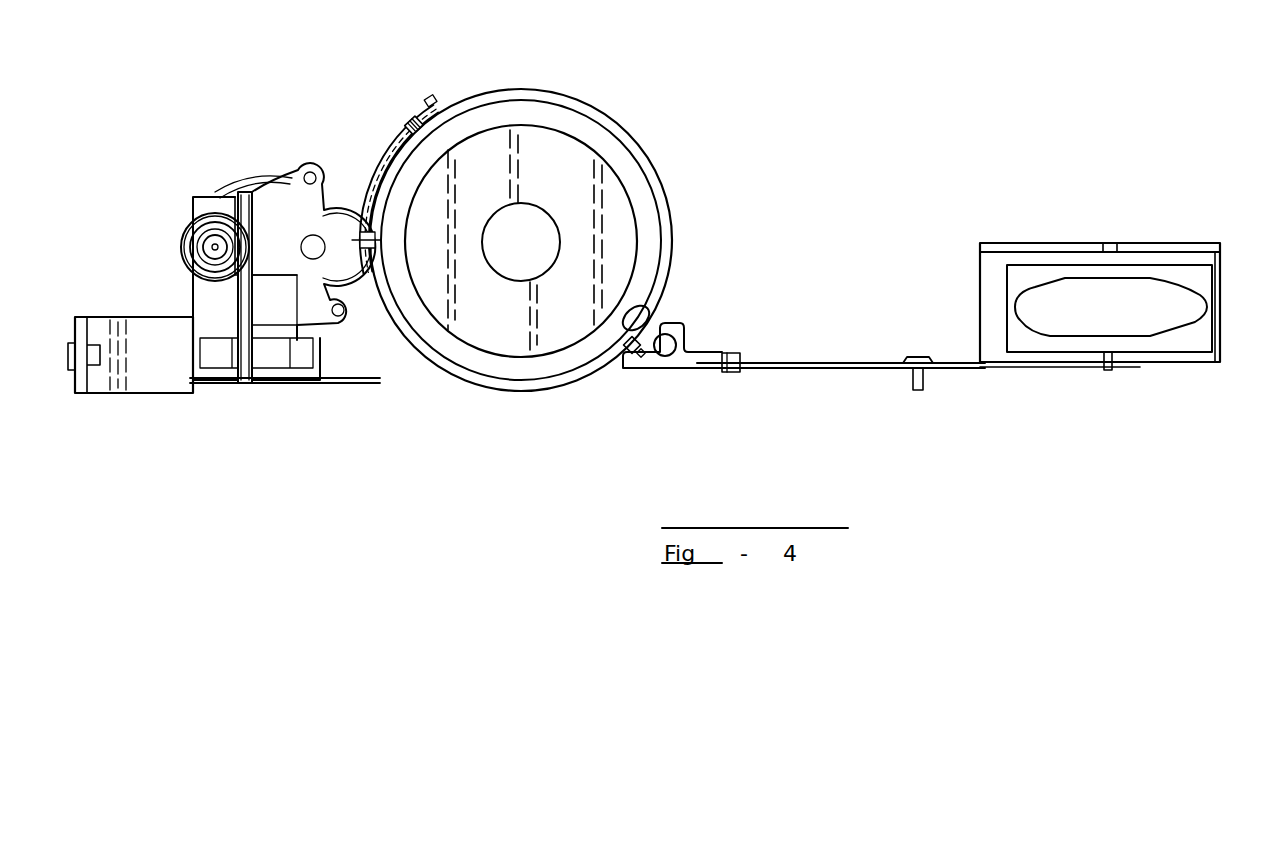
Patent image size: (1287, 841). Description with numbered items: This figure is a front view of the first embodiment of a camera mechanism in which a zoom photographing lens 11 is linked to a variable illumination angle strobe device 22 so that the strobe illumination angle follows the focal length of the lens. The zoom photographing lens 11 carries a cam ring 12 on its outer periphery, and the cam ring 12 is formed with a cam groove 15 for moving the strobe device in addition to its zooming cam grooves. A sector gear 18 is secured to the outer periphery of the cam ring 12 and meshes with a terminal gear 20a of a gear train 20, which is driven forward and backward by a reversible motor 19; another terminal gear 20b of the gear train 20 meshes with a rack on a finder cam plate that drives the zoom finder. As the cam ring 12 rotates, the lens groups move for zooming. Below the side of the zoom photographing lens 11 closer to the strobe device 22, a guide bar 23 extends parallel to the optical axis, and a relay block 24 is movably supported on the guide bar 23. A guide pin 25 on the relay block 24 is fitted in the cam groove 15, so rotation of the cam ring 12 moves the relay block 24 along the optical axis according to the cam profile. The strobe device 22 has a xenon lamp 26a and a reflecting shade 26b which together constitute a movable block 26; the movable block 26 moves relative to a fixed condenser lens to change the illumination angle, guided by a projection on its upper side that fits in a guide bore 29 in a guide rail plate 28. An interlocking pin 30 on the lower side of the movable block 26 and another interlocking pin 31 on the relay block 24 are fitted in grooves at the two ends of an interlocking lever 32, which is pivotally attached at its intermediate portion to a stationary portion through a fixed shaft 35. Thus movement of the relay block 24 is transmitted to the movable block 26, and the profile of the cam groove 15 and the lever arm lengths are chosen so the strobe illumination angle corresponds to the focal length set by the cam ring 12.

The zoom photographing lens 11 is at (569, 93).
The cam ring 12 is at (485, 388).
The cam groove for moving the strobe device 15 is at (642, 312).
The sector gear 18 is at (436, 100).
The reversible motor 19 is at (148, 377).
The gear train 20 is at (309, 152).
The terminal gear 20a is at (344, 228).
The terminal gear 20b is at (218, 252).
The variable illumination angle strobe device 22 is at (1221, 233).
The guide bar 23 is at (665, 357).
The relay block 24 is at (703, 353).
The guide pin 25 is at (632, 352).
The movable block 26 is at (1110, 243).
The xenon lamp 26a is at (1172, 302).
The reflecting shade 26b is at (1205, 338).
The guide rail plate 28 is at (1195, 245).
The guide bore 29 is at (1103, 243).
The interlocking pin 30 is at (1108, 368).
The interlocking pin 31 is at (732, 372).
The interlocking lever 32 is at (870, 369).
The fixed shaft 35 is at (922, 382).